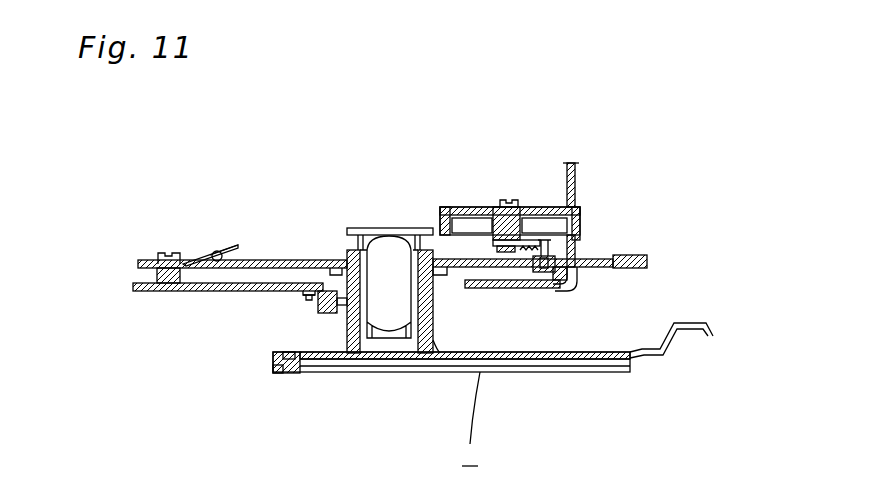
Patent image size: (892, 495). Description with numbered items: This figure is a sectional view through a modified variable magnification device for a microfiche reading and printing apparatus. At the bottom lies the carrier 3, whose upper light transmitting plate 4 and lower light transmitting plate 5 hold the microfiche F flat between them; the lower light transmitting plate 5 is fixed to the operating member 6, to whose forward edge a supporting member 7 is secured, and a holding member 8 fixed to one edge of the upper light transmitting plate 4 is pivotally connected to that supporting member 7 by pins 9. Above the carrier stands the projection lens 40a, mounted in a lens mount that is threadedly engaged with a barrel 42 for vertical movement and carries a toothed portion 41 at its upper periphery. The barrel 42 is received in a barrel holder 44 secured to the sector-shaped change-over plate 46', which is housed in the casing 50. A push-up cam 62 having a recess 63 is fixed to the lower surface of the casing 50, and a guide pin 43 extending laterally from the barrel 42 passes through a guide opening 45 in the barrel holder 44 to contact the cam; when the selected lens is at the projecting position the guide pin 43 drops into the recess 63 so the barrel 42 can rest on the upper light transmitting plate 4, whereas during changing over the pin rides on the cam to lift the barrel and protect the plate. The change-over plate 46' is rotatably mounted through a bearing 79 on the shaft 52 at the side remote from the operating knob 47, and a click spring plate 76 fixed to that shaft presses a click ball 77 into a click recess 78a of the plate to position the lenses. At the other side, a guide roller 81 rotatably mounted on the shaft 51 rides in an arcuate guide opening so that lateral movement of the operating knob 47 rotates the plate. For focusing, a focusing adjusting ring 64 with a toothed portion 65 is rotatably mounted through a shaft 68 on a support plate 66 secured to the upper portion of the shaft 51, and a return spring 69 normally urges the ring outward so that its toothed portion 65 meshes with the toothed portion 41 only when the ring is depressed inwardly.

The carrier 3 is at (499, 372).
The upper light transmitting plate 4 is at (554, 352).
The lower light transmitting plate 5 is at (585, 366).
The operating member 6 is at (665, 355).
The supporting member 7 is at (280, 373).
The holding member 8 is at (292, 356).
The pins 9 is at (283, 360).
The toothed portion 41 is at (347, 228).
The projection lens 40a is at (384, 236).
The barrel 42 is at (437, 340).
The guide pin 43 is at (343, 310).
The barrel holder 44 is at (436, 300).
The guide opening 45 is at (368, 283).
The change-over plate 46' is at (512, 312).
The operating knob 47 is at (642, 255).
The casing 50 is at (580, 282).
The shaft 51 is at (576, 280).
The shaft 52 is at (166, 285).
The push-up cam 62 is at (325, 313).
The recess 63 is at (310, 300).
The focusing adjusting ring 64 is at (474, 218).
The toothed portion 65 is at (440, 215).
The support plate 66 is at (540, 222).
The shaft 68 is at (495, 207).
The return spring 69 is at (553, 282).
The click spring plate 76 is at (205, 255).
The click ball 77 is at (238, 250).
The click recess 78a is at (218, 262).
The bearing 79 is at (152, 268).
The guide roller 81 is at (560, 252).
The microfiche F is at (471, 420).